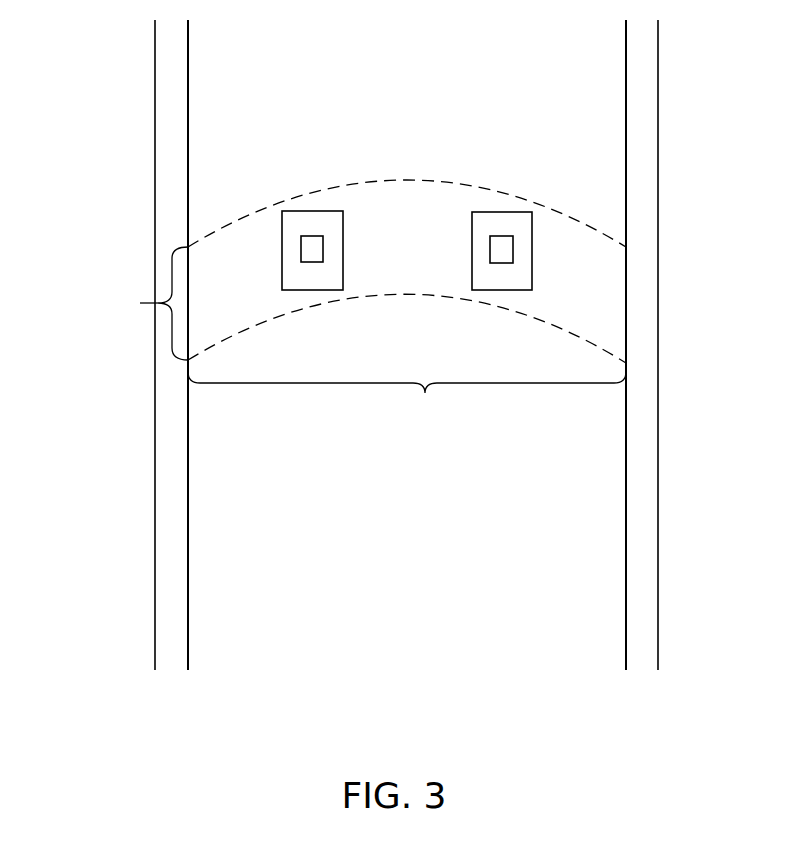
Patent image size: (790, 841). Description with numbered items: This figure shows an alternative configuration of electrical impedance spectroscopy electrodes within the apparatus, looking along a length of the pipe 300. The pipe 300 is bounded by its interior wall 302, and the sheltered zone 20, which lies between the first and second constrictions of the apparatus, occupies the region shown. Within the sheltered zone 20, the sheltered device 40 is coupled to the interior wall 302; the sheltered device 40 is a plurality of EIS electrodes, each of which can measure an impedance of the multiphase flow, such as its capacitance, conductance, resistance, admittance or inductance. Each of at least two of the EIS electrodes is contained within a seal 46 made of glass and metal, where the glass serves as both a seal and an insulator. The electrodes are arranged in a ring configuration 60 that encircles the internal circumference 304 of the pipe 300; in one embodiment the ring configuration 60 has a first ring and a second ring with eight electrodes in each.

The sheltered zone 20 is at (382, 61).
The sheltered device 40 is at (320, 245).
The seal 46 is at (307, 210).
The ring configuration 60 is at (435, 170).
The pipe 300 is at (134, 520).
The interior wall 302 is at (611, 553).
The internal circumference 304 is at (350, 338).